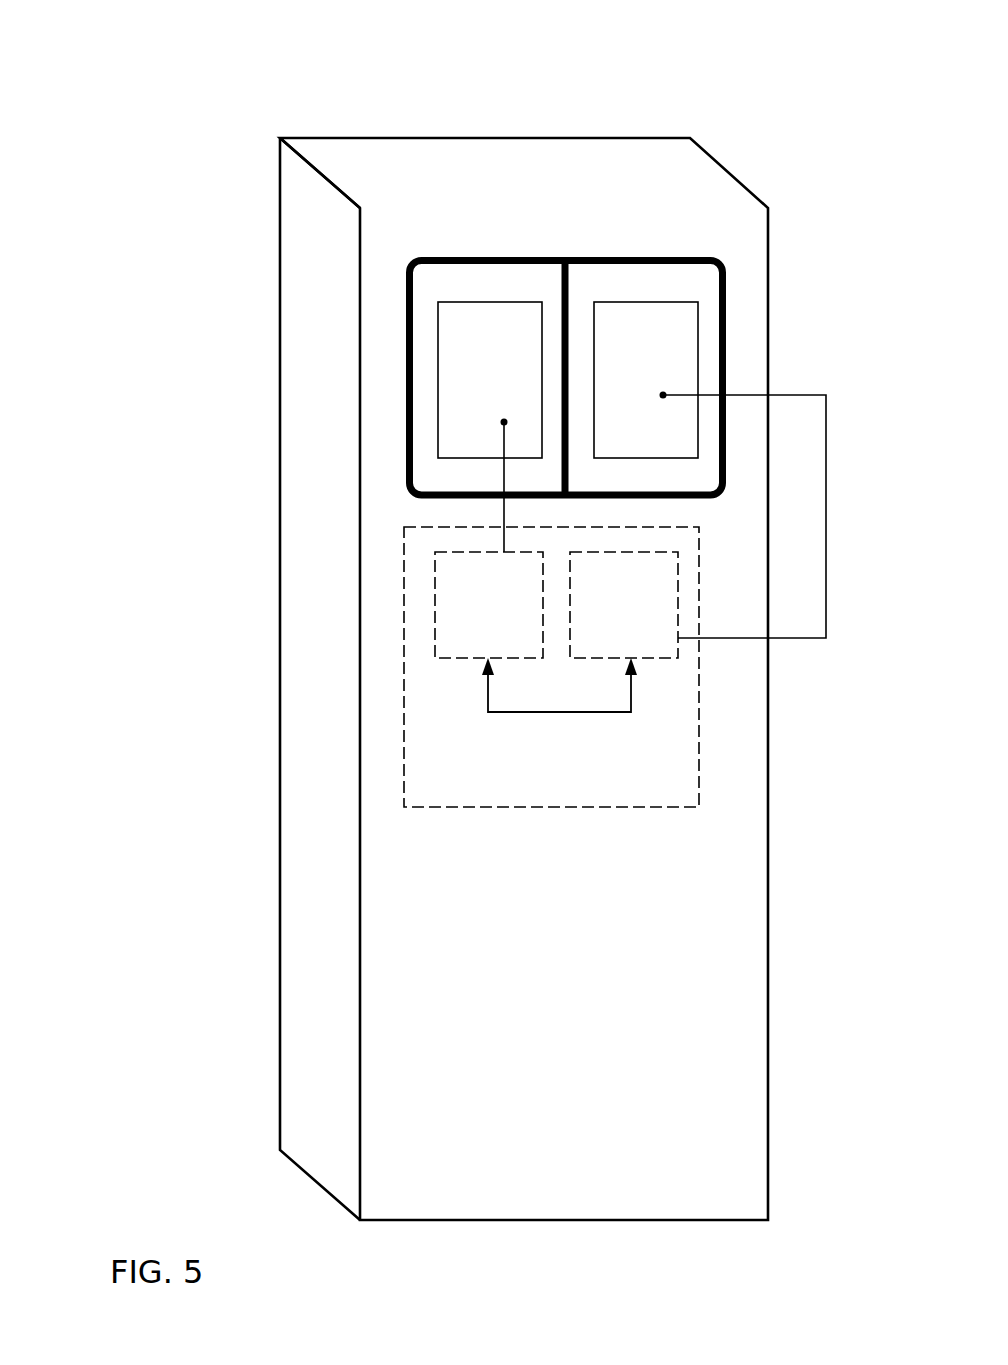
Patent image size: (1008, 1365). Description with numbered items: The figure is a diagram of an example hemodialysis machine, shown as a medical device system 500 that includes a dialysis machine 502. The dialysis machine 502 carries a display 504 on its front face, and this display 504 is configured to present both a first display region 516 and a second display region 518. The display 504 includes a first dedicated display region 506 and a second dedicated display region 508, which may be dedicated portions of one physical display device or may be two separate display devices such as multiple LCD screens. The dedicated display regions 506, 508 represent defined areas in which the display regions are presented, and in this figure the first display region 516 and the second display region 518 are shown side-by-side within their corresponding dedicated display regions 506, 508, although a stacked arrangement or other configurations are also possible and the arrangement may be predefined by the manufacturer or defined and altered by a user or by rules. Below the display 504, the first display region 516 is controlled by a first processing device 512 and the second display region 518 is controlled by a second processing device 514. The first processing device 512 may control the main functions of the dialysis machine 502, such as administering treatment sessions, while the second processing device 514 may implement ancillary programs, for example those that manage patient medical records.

The medical device system 500 is at (128, 123).
The dialysis machine 502 is at (280, 845).
The display 504 is at (405, 493).
The first dedicated display region 506 is at (429, 280).
The second dedicated display region 508 is at (648, 278).
The first processing device 512 is at (655, 658).
The second processing device 514 is at (458, 658).
The first display region 516 is at (710, 470).
The second display region 518 is at (490, 427).